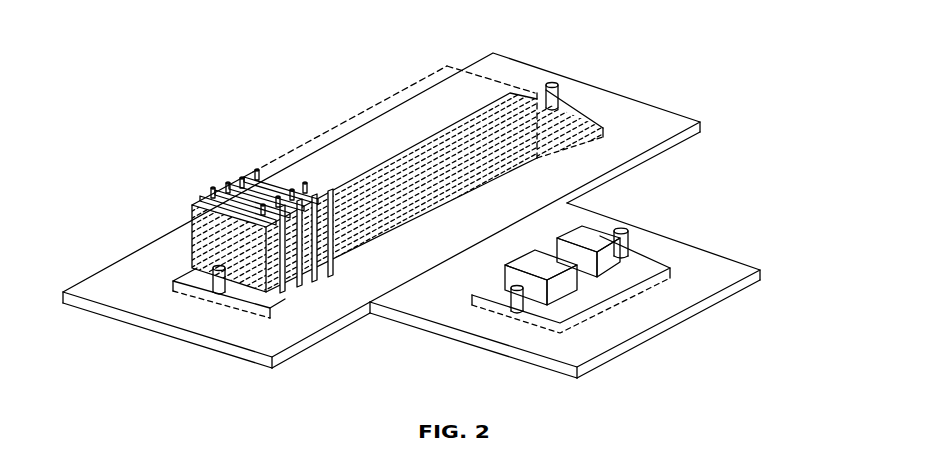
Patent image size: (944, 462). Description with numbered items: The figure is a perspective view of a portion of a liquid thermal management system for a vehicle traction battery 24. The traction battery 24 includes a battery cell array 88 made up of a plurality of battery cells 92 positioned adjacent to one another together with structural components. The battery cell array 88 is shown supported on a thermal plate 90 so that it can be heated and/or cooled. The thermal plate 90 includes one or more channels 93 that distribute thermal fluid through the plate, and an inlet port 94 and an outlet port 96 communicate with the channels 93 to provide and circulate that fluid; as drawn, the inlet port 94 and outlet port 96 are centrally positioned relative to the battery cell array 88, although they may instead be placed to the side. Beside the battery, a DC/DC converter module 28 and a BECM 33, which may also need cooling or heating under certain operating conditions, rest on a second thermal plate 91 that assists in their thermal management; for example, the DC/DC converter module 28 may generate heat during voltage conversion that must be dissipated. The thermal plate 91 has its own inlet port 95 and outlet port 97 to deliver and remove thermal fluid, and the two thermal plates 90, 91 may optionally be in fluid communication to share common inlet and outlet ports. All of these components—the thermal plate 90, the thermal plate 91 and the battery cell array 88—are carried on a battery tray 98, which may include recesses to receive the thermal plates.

The traction battery 24 is at (365, 229).
The DC/DC converter module 28 is at (525, 262).
The BECM 33 is at (578, 232).
The battery cell array 88 is at (392, 88).
The thermal plate 90 is at (266, 300).
The thermal plate 91 is at (598, 304).
The battery cells 92 is at (253, 173).
The channels 93 is at (442, 190).
The inlet port 94 is at (560, 105).
The inlet port 95 is at (624, 229).
The outlet port 96 is at (225, 292).
The outlet port 97 is at (509, 292).
The battery tray 98 is at (673, 118).